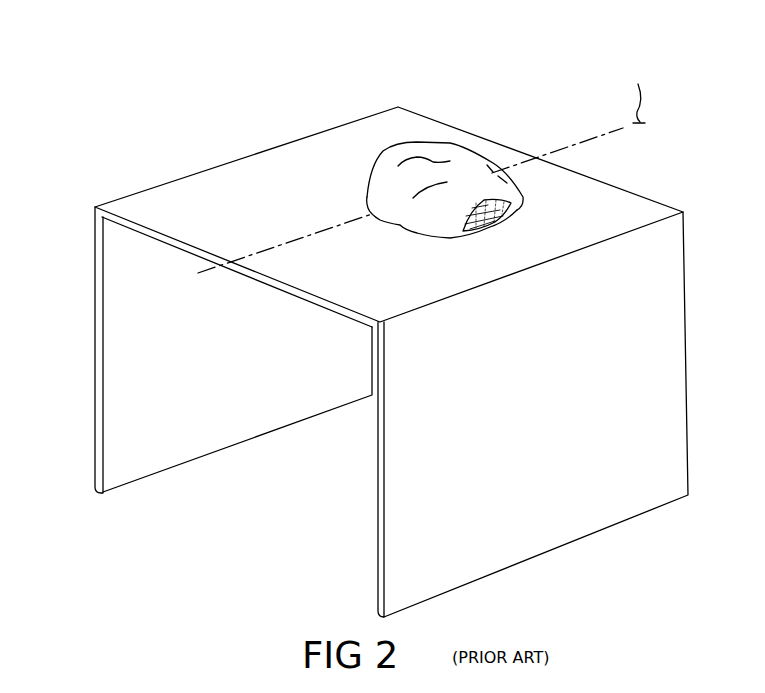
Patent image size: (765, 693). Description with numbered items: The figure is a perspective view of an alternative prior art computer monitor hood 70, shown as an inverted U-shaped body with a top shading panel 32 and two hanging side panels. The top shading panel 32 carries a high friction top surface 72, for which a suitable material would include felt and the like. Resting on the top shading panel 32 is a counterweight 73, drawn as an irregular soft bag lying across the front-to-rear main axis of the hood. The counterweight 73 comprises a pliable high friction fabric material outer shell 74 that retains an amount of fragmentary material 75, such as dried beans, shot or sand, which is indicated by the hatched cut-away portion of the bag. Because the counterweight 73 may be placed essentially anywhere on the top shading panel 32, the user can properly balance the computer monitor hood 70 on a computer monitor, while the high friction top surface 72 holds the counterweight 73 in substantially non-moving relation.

The computer monitor hood 70 is at (124, 126).
The top shading panel 32 is at (316, 150).
The high friction top surface 72 is at (414, 278).
The counterweight 73 is at (453, 147).
The outer shell 74 is at (400, 228).
The fragmentary material 75 is at (498, 218).